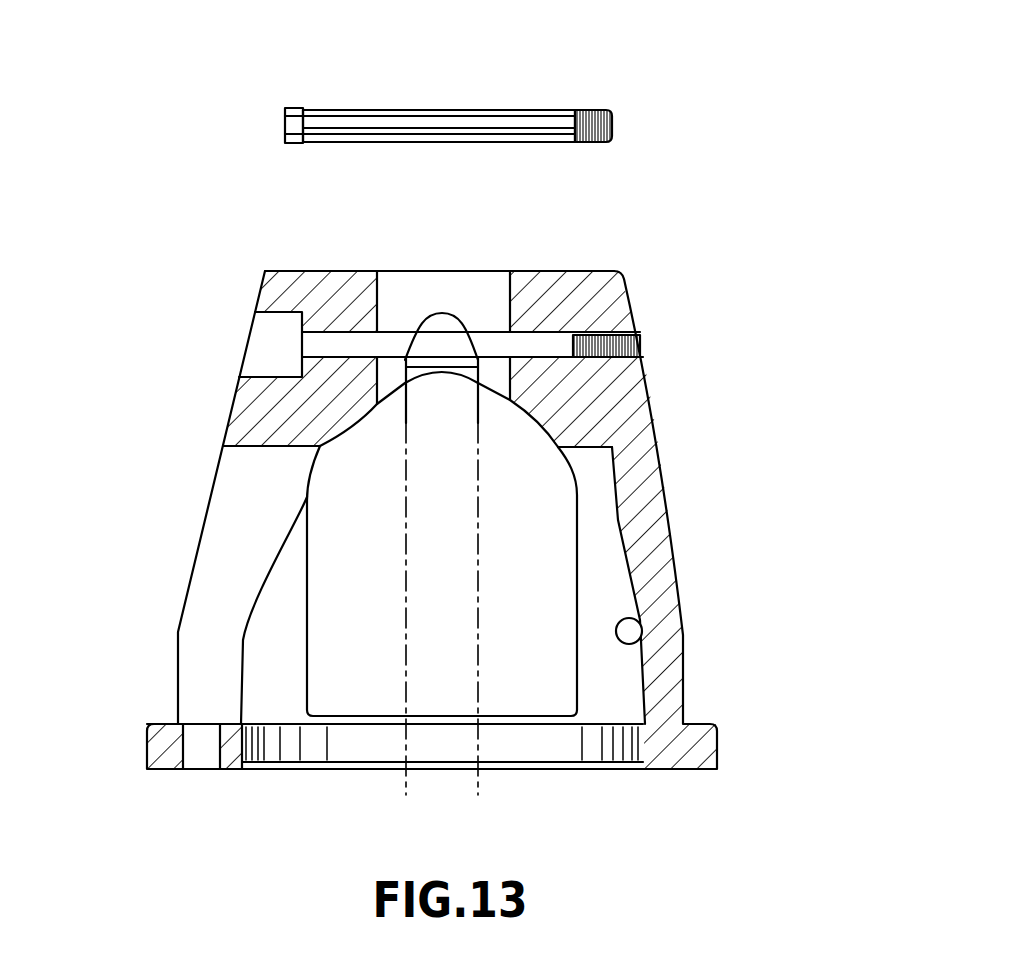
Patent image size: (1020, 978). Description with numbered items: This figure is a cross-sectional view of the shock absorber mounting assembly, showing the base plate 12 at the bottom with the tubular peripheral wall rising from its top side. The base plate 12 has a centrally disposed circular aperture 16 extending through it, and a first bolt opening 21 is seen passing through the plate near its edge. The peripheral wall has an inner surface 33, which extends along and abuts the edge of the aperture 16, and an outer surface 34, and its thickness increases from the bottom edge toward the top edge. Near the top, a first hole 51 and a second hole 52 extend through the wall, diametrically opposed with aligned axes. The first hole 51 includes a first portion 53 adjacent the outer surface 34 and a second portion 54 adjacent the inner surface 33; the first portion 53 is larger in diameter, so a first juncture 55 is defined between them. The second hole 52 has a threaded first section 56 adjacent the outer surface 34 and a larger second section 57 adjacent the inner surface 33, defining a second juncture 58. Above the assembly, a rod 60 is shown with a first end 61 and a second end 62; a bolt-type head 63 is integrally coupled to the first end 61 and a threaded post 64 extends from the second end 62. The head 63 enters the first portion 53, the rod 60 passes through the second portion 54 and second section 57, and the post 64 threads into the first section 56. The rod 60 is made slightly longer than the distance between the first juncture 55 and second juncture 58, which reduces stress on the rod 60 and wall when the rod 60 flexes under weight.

The base plate 12 is at (155, 770).
The aperture 16 is at (242, 742).
The first bolt opening 21 is at (206, 750).
The inner surface 33 is at (630, 618).
The outer surface 34 is at (668, 457).
The first hole 51 is at (200, 361).
The second hole 52 is at (695, 358).
The first portion 53 is at (262, 333).
The second portion 54 is at (338, 348).
The first juncture 55 is at (297, 343).
The first section 56 is at (640, 343).
The second section 57 is at (520, 345).
The second juncture 58 is at (570, 345).
The rod 60 is at (415, 110).
The first end 61 is at (326, 118).
The second end 62 is at (570, 127).
The head 63 is at (280, 125).
The threaded post 64 is at (612, 125).